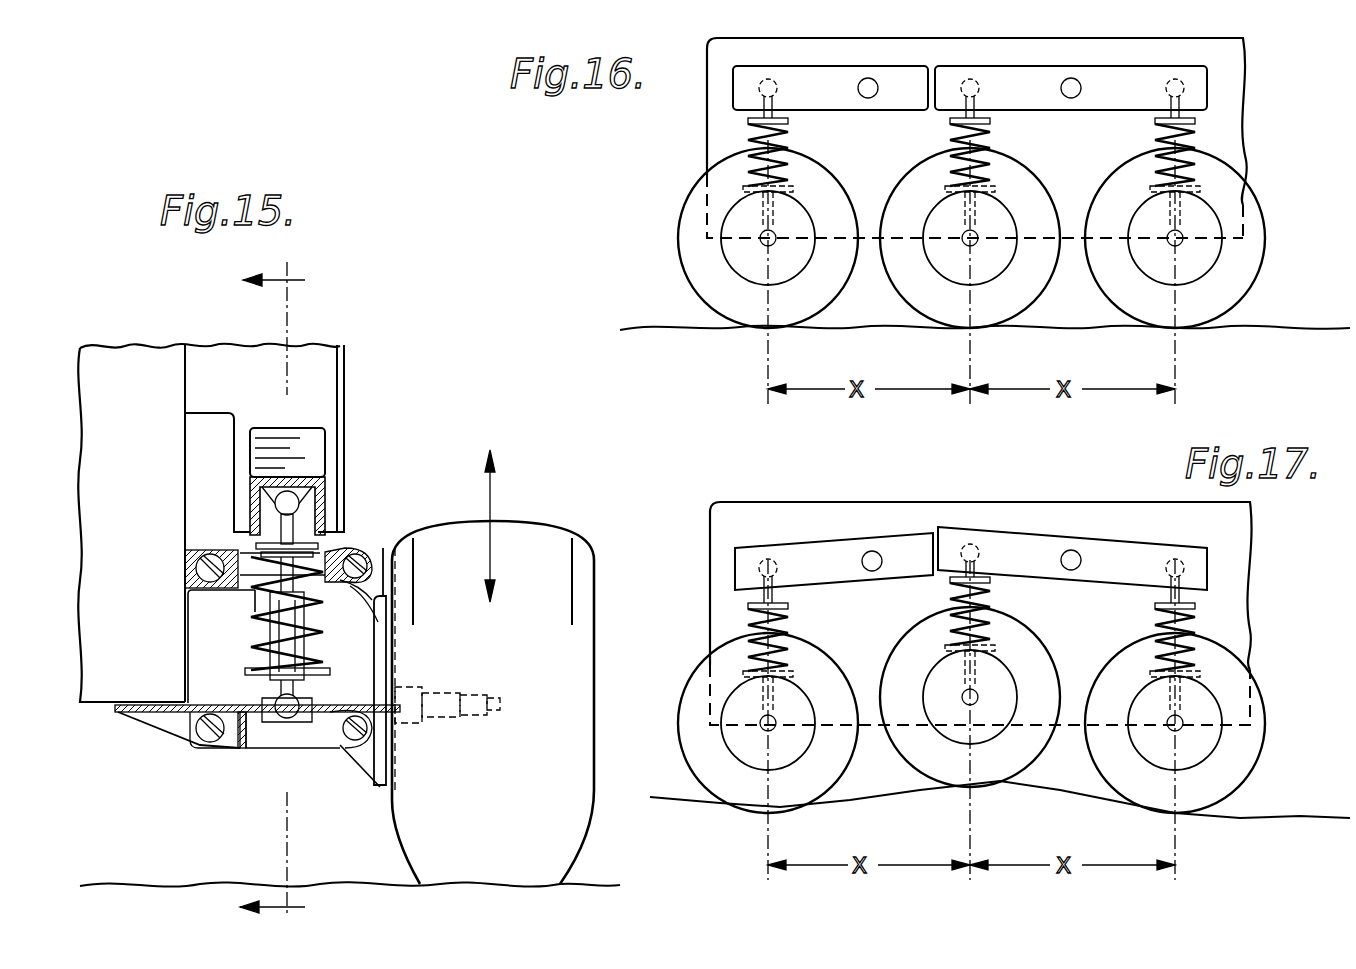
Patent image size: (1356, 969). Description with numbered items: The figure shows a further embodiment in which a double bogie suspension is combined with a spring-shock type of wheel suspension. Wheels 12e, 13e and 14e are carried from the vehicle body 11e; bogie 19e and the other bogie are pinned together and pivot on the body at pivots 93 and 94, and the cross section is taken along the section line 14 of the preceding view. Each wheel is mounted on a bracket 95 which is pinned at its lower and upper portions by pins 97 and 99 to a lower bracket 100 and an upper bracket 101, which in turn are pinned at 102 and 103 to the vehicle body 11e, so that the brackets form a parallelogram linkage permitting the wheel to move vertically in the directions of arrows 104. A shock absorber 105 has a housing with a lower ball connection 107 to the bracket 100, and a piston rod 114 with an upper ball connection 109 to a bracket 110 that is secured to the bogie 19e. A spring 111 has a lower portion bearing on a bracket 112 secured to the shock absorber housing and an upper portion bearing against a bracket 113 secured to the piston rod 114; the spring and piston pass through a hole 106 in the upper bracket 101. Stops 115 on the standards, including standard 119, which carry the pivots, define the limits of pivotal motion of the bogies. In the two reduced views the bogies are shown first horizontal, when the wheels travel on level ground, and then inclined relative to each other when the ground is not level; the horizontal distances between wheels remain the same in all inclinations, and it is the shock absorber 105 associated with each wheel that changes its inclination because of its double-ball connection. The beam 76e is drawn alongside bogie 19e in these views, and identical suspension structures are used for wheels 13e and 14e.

In FIG. 15, the vehicle body 11e is at (128, 352).
In FIG. 16, the vehicle body 11e is at (1240, 112).
In FIG. 17, the vehicle body 11e is at (1245, 604).
In FIG. 15, the wheel 12e is at (590, 560).
In FIG. 16, the wheel 12e is at (700, 292).
In FIG. 17, the wheel 12e is at (708, 782).
In FIG. 16, the wheel 13e is at (925, 295).
In FIG. 17, the wheel 13e is at (1040, 665).
In FIG. 16, the wheel 14e is at (1135, 294).
In FIG. 17, the wheel 14e is at (1267, 755).
In FIG. 15, the section line of FIG. 14 is at (291, 590).
In FIG. 16, the bogie 19e is at (812, 66).
In FIG. 17, the bogie 19e is at (812, 548).
In FIG. 16, the rocker beam 76e is at (1183, 66).
In FIG. 17, the rocker beam 76e is at (1176, 547).
In FIG. 16, the pivot 94 is at (870, 78).
In FIG. 17, the pivot 94 is at (874, 550).
In FIG. 16, the pivot 93 is at (1072, 78).
In FIG. 17, the pivot 93 is at (1071, 550).
In FIG. 15, the standard 119 is at (345, 354).
In FIG. 15, the upper ball connection 109 is at (285, 478).
In FIG. 15, the stops 115 is at (312, 442).
In FIG. 15, the bracket 110 is at (315, 478).
In FIG. 15, the bracket 113 is at (240, 530).
In FIG. 15, the bracket 101 is at (258, 545).
In FIG. 15, the pin 103 is at (186, 565).
In FIG. 15, the spring 111 is at (192, 602).
In FIG. 15, the shock absorber 105 is at (262, 625).
In FIG. 15, the bracket 112 is at (240, 665).
In FIG. 15, the lower ball connection 107 is at (270, 700).
In FIG. 15, the bracket 100 is at (272, 750).
In FIG. 15, the pin 102 is at (198, 746).
In FIG. 15, the pin 97 is at (358, 746).
In FIG. 15, the hole 106 is at (328, 553).
In FIG. 15, the pin 99 is at (360, 556).
In FIG. 15, the bracket 95 is at (382, 600).
In FIG. 15, the piston rod 114 is at (380, 622).
In FIG. 15, the arrows 104 is at (494, 500).